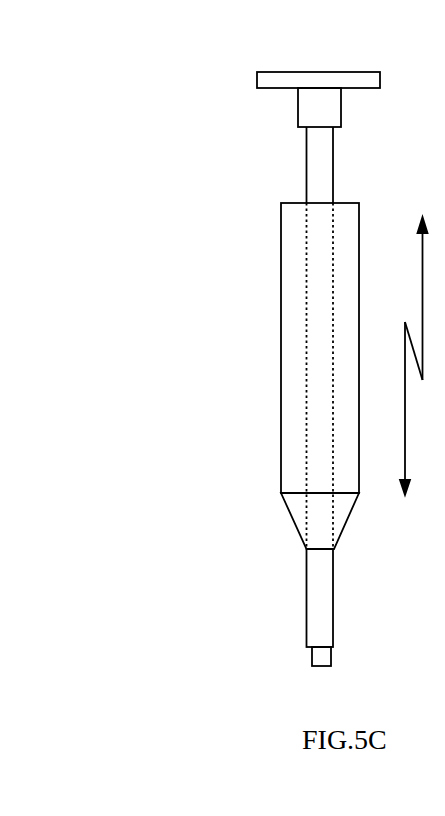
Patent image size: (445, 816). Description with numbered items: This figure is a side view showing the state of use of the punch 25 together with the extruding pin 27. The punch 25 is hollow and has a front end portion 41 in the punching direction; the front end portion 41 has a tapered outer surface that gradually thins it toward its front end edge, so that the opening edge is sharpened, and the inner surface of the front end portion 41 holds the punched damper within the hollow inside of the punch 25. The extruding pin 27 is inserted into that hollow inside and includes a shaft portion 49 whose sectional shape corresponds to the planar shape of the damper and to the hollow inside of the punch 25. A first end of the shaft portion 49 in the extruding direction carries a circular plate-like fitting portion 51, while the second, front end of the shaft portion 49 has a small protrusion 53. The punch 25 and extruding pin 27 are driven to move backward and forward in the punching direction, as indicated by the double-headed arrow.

The punch 25 is at (295, 243).
The extruding pin 27 is at (323, 167).
The front end portion 41 is at (344, 513).
The shaft portion 49 is at (320, 598).
The fitting portion 51 is at (283, 72).
The small protrusion 53 is at (322, 656).